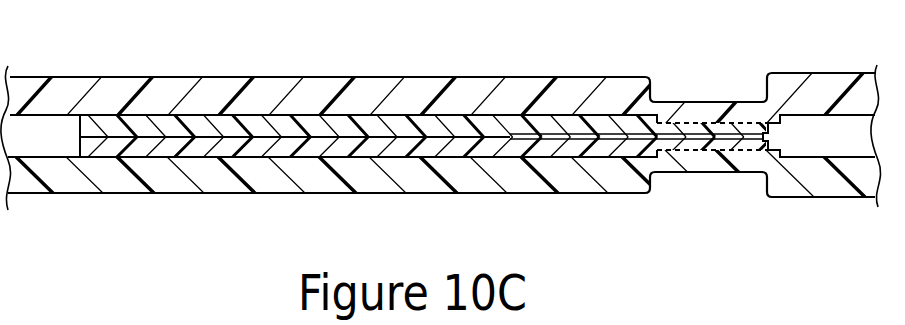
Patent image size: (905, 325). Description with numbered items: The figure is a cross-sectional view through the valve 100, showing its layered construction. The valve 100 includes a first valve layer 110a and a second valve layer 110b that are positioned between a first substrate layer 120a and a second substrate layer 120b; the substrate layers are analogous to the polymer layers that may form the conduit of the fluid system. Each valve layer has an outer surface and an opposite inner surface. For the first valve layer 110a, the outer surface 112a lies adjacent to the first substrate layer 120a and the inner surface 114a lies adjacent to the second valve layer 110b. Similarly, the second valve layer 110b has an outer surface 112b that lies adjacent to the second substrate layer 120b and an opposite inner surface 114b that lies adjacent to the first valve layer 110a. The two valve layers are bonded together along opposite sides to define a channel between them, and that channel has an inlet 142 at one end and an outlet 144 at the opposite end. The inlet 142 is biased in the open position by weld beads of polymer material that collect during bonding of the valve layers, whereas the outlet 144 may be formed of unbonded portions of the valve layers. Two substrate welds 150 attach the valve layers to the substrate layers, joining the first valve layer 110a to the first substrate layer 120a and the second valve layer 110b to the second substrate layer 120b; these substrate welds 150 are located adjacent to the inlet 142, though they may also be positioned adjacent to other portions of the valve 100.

The valve 100 is at (160, 106).
The first valve layer 110a is at (222, 125).
The second valve layer 110b is at (222, 147).
The outer surface 112a is at (405, 115).
The outer surface 112b is at (403, 157).
The inner surface 114a is at (306, 140).
The inner surface 114b is at (345, 128).
The first substrate layer 120a is at (508, 88).
The second substrate layer 120b is at (510, 173).
The inlet 142 is at (768, 137).
The outlet 144 is at (80, 135).
The substrate welds 150 is at (700, 123).